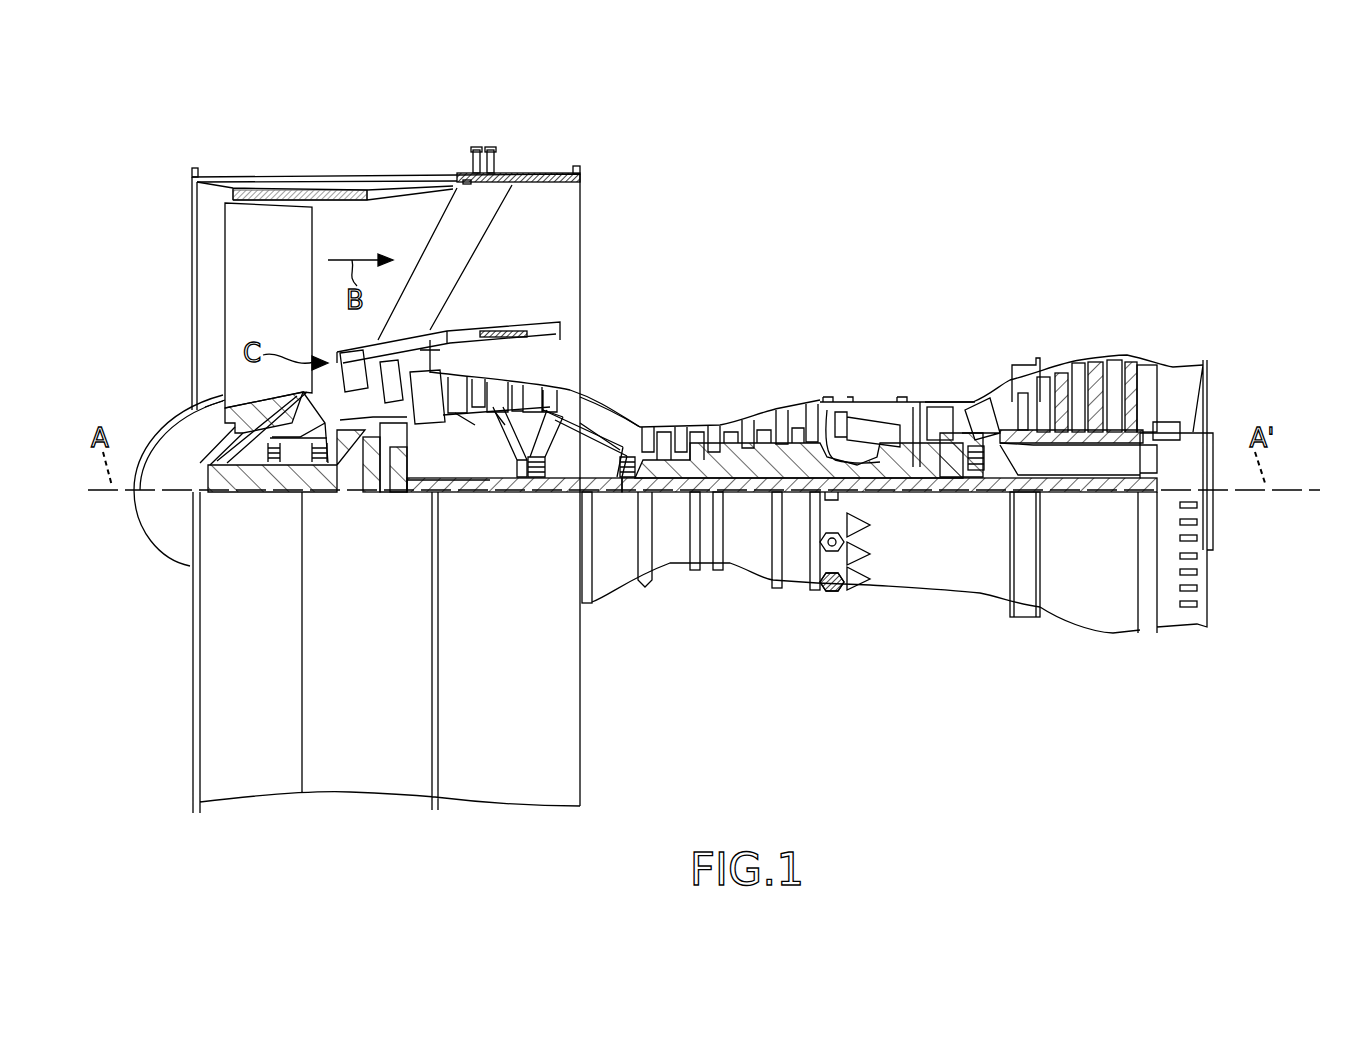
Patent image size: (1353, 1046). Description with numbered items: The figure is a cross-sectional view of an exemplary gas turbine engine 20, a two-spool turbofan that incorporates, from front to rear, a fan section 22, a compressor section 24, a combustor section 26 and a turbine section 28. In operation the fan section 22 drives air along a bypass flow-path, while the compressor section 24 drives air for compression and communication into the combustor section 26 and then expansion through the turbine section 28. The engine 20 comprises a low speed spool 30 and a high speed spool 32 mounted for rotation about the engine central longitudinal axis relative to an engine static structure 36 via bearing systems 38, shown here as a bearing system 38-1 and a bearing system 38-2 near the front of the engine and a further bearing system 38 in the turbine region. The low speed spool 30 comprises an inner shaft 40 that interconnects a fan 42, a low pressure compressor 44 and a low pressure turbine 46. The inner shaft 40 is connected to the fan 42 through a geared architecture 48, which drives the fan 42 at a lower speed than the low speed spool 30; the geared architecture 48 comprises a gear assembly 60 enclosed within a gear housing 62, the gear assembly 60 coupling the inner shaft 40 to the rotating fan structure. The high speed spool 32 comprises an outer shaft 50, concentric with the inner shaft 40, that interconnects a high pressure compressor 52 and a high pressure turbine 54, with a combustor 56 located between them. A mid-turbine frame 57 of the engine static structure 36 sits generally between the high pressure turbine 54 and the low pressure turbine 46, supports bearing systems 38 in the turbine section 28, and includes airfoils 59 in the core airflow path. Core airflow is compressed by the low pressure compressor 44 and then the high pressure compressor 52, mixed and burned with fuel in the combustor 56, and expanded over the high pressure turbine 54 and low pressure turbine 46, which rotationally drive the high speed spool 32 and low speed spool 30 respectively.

The gas turbine engine 20 is at (932, 205).
The fan section 22 is at (433, 156).
The compressor section 24 is at (440, 292).
The combustor section 26 is at (925, 292).
The turbine section 28 is at (1145, 292).
The low speed spool 30 is at (742, 530).
The high speed spool 32 is at (785, 460).
The engine static structure 36 is at (178, 806).
The bearing system 38 is at (984, 492).
The bearing system 38-1 is at (268, 478).
The bearing system 38-2 is at (528, 492).
The inner shaft 40 is at (603, 492).
The fan 42 is at (268, 318).
The low pressure compressor section 44 is at (514, 388).
The low pressure turbine section 46 is at (1082, 373).
The geared architecture 48 is at (400, 520).
The outer shaft 50 is at (877, 470).
The high pressure compressor 52 is at (745, 425).
The high pressure turbine section 54 is at (940, 407).
The combustor 56 is at (878, 420).
The mid-turbine frame 57 is at (984, 400).
The airfoils 59 is at (1014, 380).
The gear assembly 60 is at (400, 468).
The gear housing 62 is at (398, 432).